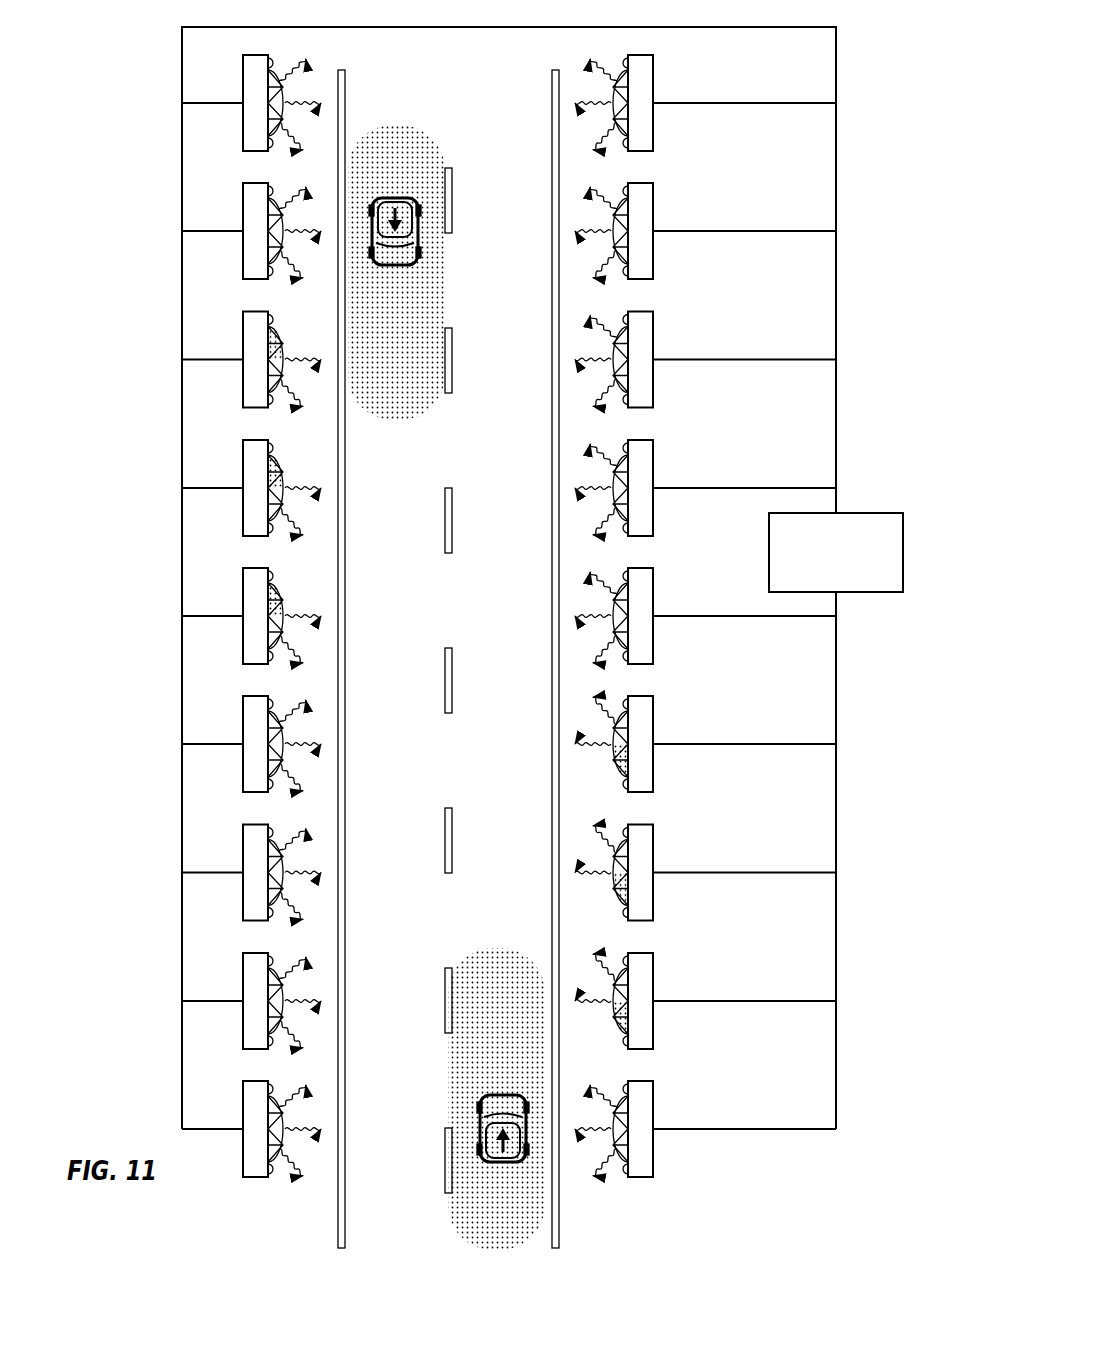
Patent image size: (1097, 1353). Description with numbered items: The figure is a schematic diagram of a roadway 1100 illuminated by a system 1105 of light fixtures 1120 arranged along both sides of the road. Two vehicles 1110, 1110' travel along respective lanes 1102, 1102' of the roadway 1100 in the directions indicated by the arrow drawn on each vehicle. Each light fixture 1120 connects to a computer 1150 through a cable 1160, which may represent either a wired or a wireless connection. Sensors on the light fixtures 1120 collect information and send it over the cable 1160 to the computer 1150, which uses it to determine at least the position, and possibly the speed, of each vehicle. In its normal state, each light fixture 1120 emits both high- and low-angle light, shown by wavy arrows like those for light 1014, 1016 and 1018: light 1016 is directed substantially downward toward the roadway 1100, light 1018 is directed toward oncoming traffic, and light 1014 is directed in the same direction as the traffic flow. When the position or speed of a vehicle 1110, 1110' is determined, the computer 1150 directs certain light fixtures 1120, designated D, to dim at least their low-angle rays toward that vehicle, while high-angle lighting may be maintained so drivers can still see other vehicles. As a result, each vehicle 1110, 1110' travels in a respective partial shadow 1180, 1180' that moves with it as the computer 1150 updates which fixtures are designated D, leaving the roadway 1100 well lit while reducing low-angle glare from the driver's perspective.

The system 1105 is at (104, 38).
The cable 1160 is at (200, 104).
The light fixture 1120 is at (245, 256).
The dimmed light fixture designation D is at (260, 367).
The light 1014 is at (595, 1078).
The light 1016 is at (560, 1098).
The light 1018 is at (598, 1175).
The computer 1150 is at (836, 552).
The roadway 1100 is at (448, 659).
The lane 1102 is at (403, 652).
The lane 1102' is at (501, 583).
The partial shadow 1180 is at (396, 303).
The partial shadow 1180' is at (496, 1064).
The vehicle 1110 is at (438, 240).
The vehicle 1110' is at (457, 1118).